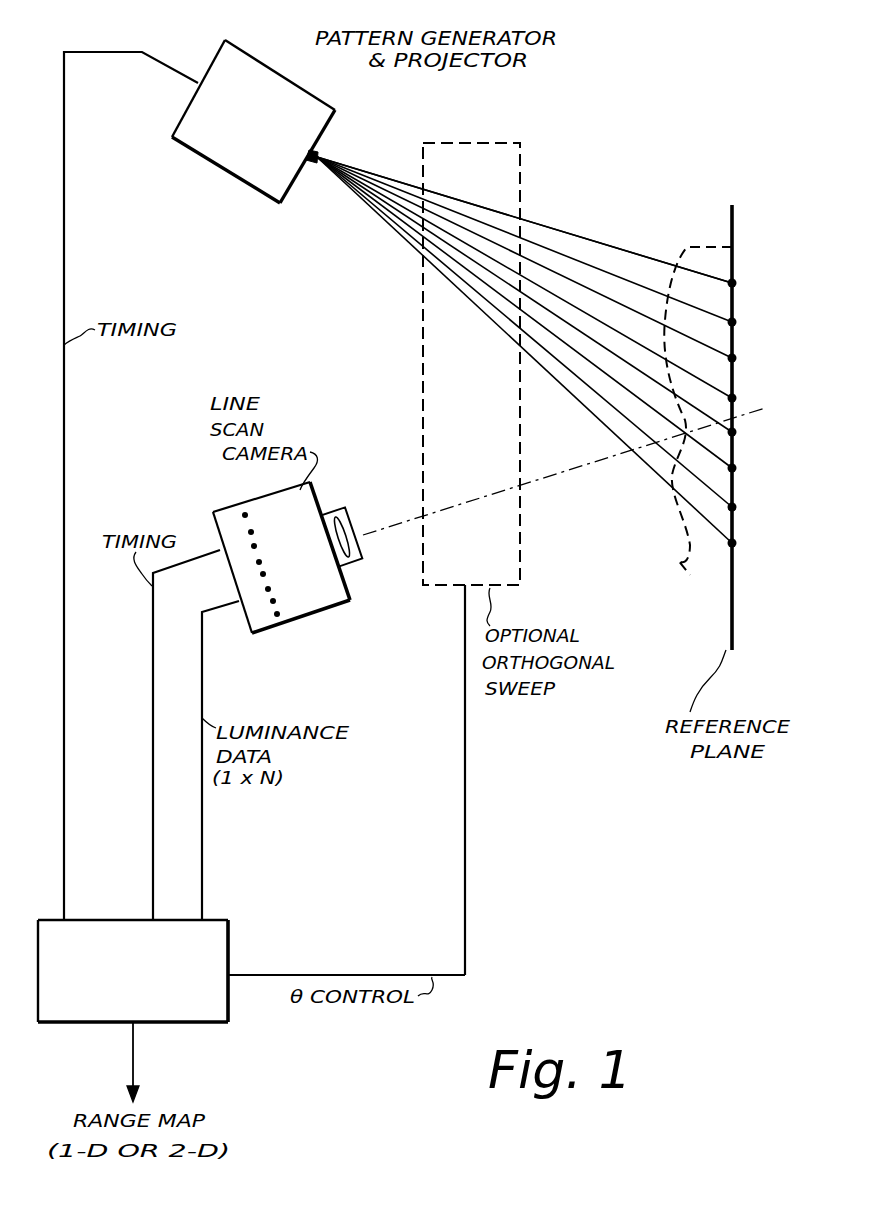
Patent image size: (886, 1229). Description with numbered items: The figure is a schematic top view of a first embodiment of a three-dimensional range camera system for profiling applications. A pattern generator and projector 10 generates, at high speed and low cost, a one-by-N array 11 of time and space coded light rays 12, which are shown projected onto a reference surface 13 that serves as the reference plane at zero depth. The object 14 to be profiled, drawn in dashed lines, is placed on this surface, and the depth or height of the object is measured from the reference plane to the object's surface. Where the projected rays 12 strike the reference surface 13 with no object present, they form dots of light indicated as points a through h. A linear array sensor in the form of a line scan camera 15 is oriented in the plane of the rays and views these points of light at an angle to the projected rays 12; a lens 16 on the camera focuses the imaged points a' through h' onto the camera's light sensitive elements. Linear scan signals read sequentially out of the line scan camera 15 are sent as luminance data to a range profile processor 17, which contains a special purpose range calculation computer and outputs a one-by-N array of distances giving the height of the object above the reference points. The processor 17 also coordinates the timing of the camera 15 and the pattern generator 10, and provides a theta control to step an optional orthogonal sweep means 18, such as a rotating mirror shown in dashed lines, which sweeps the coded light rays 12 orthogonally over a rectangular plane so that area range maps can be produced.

The pattern generator and projector 10 is at (214, 58).
The 1×N array of light rays 11 is at (384, 160).
The coded light rays 12 is at (612, 246).
The reference surface 13 is at (731, 220).
The object 14 is at (690, 530).
The line scan camera 15 is at (314, 610).
The lens 16 is at (352, 540).
The range profile processor 17 is at (113, 920).
The orthogonal sweep means 18 is at (521, 501).